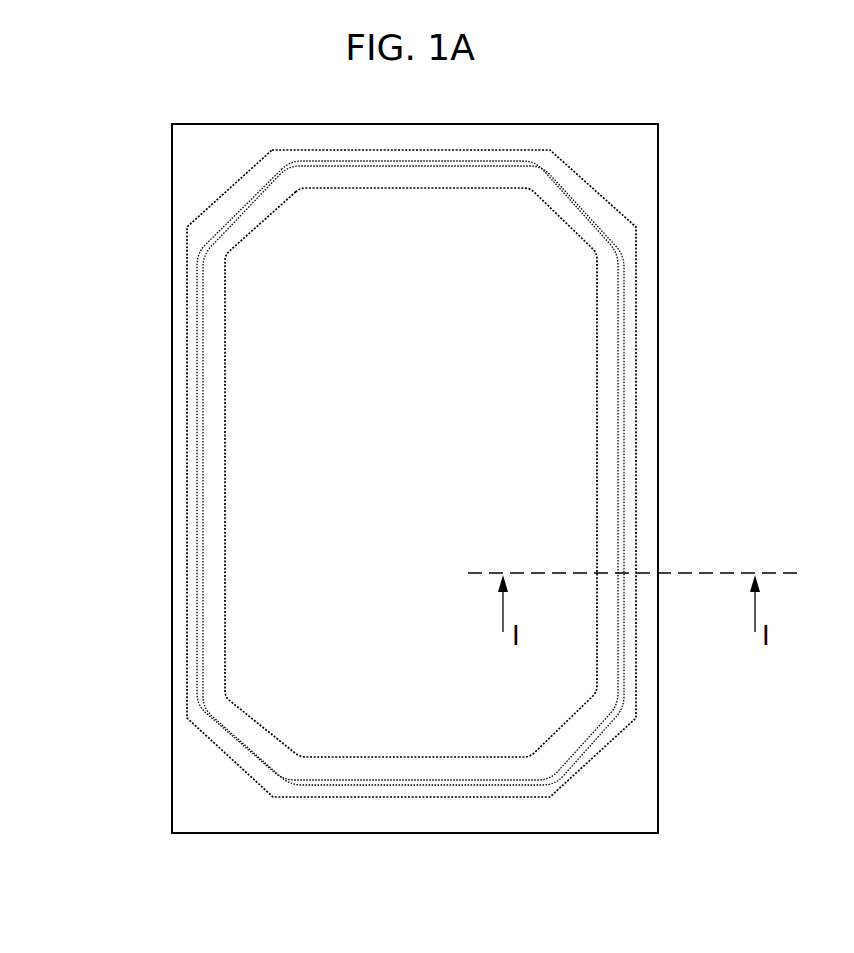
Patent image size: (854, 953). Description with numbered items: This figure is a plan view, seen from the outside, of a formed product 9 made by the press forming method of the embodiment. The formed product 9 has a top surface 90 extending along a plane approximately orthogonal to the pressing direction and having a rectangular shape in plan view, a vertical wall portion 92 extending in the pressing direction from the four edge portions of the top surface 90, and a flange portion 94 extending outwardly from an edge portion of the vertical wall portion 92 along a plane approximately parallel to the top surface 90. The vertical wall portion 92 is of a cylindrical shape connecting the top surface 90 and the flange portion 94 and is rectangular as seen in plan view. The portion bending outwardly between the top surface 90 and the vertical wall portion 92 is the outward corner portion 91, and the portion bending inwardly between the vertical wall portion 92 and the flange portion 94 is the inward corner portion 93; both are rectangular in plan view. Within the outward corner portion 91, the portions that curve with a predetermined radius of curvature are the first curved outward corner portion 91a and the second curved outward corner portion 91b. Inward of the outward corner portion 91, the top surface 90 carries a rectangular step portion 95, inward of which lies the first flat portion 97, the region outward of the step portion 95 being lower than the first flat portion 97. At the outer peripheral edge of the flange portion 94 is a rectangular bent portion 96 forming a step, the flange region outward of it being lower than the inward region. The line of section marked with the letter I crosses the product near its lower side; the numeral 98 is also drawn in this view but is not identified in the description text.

The formed product 9 is at (76, 133).
The top surface 90 is at (562, 355).
The outward corner portion 91 is at (205, 495).
The first curved outward corner portion 91a is at (205, 250).
The second curved outward corner portion 91b is at (277, 170).
The vertical wall portion 92 is at (632, 407).
The inward corner portion 93 is at (198, 540).
The flange portion 94 is at (642, 480).
The step portion 95 is at (223, 392).
The bent portion 96 is at (187, 588).
The first flat portion 97 is at (265, 345).
The gap region 98 is at (215, 435).